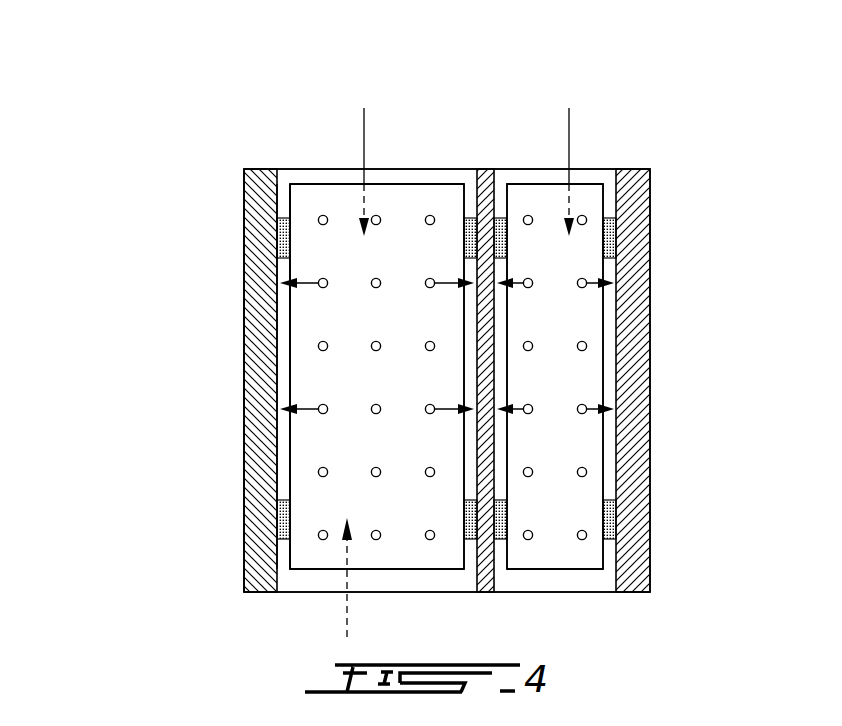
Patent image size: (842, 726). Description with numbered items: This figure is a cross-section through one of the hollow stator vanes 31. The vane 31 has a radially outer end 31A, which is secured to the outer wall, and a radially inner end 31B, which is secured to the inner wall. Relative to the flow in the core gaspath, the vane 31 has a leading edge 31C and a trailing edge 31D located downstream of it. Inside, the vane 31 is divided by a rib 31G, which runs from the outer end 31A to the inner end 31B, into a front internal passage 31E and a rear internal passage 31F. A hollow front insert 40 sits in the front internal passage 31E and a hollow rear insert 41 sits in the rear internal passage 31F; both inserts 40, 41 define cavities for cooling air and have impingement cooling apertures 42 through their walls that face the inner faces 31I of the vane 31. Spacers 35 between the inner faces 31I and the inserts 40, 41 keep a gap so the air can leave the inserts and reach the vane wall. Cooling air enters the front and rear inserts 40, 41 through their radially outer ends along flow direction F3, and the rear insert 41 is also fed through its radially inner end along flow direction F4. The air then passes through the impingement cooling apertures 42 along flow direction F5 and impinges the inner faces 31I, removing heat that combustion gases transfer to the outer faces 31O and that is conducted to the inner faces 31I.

The vane 31 is at (624, 132).
The radially outer end 31A is at (403, 168).
The radially inner end 31B is at (403, 592).
The leading edge 31C is at (650, 328).
The trailing edge 31D is at (244, 395).
The front internal passage 31E is at (541, 163).
The rear internal passage 31F is at (333, 163).
The rib 31G is at (483, 168).
The inner faces 31I is at (285, 180).
The outer faces 31O is at (244, 203).
The spacers 35 is at (282, 510).
The front insert 40 is at (557, 246).
The rear insert 41 is at (325, 365).
The impingement cooling apertures 42 is at (90, 318).
The flow direction F3 is at (365, 127).
The flow direction F4 is at (347, 609).
The flow direction F5 is at (310, 412).